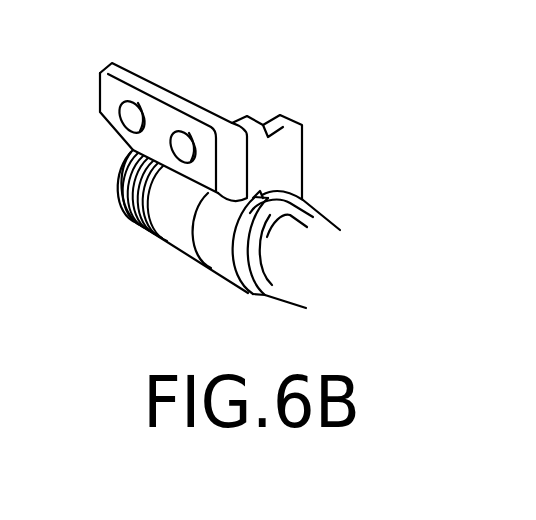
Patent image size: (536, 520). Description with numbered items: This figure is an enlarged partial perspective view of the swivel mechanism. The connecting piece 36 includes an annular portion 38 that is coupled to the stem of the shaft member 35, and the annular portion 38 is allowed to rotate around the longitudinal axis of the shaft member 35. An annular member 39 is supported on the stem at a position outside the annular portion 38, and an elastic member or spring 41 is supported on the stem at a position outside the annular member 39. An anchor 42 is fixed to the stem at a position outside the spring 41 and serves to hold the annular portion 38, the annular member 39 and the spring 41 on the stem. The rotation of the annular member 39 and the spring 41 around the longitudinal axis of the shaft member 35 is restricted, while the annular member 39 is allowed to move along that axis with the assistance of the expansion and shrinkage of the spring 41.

The shaft member 35 is at (328, 233).
The connecting piece 36 is at (113, 69).
The annular portion 38 is at (217, 264).
The annular member 39 is at (175, 237).
The spring 41 is at (128, 228).
The anchor 42 is at (123, 178).